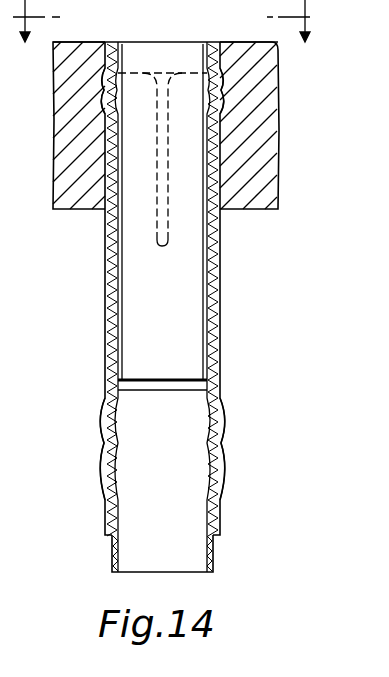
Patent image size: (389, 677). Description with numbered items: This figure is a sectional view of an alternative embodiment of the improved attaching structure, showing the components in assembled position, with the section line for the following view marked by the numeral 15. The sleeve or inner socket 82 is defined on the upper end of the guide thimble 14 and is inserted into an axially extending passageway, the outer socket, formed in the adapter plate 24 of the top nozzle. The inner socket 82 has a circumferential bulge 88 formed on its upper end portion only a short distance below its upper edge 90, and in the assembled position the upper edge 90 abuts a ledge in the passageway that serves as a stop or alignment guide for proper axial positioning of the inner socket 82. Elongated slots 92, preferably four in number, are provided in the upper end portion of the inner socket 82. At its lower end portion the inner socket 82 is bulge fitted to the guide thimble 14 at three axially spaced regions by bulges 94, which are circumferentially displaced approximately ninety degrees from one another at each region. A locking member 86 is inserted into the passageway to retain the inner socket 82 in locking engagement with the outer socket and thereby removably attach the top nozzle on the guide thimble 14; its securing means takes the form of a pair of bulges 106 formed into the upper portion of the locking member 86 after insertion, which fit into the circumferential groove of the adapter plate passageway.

The guide thimble 14 is at (212, 556).
The section line 15- 15 is at (170, 36).
The adapter plate 24 is at (278, 148).
The inner socket 82 is at (222, 274).
The locking member 86 is at (137, 356).
The circumferential bulge 88 is at (213, 88).
The upper edge 90 is at (242, 43).
The elongated slots 92 is at (170, 197).
The bulges 94 is at (103, 487).
The bulges 106 is at (133, 73).